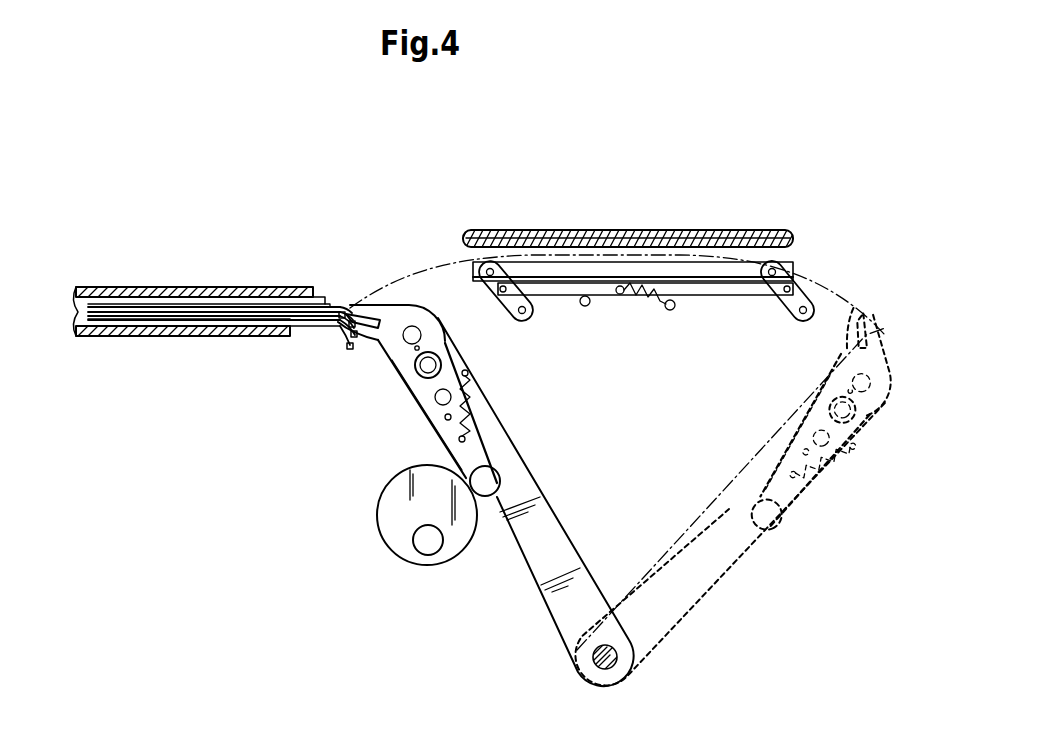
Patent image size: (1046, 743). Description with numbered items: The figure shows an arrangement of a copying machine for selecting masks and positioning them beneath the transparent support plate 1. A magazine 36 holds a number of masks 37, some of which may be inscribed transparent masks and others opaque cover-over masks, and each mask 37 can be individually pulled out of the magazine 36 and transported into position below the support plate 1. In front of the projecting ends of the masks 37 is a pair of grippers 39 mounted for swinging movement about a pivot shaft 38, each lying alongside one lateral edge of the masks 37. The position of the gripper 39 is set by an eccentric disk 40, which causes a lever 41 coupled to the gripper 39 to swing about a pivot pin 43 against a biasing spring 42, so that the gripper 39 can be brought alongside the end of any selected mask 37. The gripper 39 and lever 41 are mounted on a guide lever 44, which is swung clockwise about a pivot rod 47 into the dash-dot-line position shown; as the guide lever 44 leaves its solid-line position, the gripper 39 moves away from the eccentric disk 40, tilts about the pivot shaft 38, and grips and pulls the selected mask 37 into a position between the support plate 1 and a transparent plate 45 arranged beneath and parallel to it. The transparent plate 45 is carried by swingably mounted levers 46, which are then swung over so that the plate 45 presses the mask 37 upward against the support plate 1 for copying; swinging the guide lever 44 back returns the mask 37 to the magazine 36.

The transparent support plate 1 is at (775, 235).
The magazine 36 is at (140, 288).
The masks 37 is at (205, 305).
The pivot shaft 38 is at (411, 326).
The grippers 39 is at (360, 312).
The eccentric disk 40 is at (398, 527).
The lever 41 is at (475, 447).
The biasing spring 42 is at (467, 383).
The pivot pin 43 is at (445, 376).
The guide lever 44 is at (533, 515).
The transparent plate 45 is at (688, 272).
The swingably mounted levers 46 is at (523, 301).
The pivot rod 47 is at (598, 662).